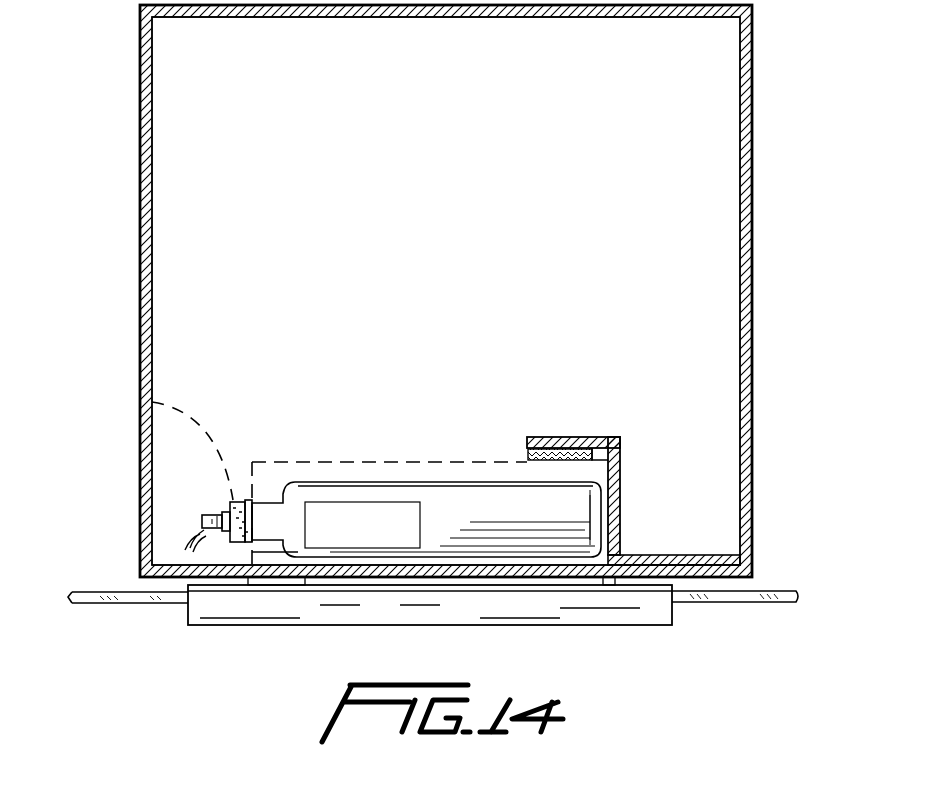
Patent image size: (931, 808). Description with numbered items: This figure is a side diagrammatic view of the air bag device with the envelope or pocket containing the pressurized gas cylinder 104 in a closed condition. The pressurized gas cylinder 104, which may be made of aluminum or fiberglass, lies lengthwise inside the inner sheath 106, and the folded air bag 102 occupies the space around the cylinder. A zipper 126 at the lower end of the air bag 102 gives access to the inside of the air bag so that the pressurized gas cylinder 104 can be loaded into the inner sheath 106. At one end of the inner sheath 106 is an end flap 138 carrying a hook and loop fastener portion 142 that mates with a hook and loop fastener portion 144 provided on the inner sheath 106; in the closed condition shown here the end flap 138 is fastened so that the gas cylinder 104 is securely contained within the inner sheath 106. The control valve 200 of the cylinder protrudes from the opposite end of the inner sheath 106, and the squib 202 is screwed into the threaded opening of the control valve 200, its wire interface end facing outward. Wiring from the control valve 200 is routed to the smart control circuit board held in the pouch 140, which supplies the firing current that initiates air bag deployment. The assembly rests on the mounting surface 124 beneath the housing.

The air bag 102 is at (432, 19).
The pressurized gas cylinder 104 is at (322, 481).
The inner sheath 106 is at (378, 450).
The mounting plate 124 is at (720, 609).
The zipper 126 is at (700, 547).
The end flap 138 is at (627, 500).
The pouch 140 is at (307, 557).
The hook and loop fastener portion 142 is at (588, 436).
The hook and loop fastener portion 144 is at (520, 455).
The control valve 200 is at (243, 500).
The squib 202 is at (218, 510).